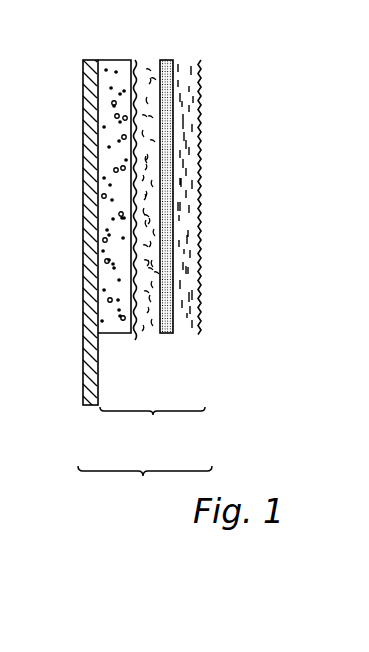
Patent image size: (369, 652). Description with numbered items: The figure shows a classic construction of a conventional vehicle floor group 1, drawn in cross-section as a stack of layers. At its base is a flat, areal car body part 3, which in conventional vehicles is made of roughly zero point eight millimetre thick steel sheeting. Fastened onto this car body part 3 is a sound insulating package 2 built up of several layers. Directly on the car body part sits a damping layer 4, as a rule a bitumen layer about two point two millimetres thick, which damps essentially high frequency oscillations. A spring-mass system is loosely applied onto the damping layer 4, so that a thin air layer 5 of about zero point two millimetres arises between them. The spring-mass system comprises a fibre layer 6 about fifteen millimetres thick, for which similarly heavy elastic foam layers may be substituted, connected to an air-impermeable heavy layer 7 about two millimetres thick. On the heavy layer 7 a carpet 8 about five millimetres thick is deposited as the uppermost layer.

The floor group 1 is at (145, 490).
The sound insulating package 2 is at (152, 428).
The car body part 3 is at (84, 117).
The damping layer 4 is at (116, 70).
The air layer 5 is at (137, 334).
The fibre layer 6 is at (152, 63).
The heavy layer 7 is at (167, 334).
The carpet 8 is at (188, 158).